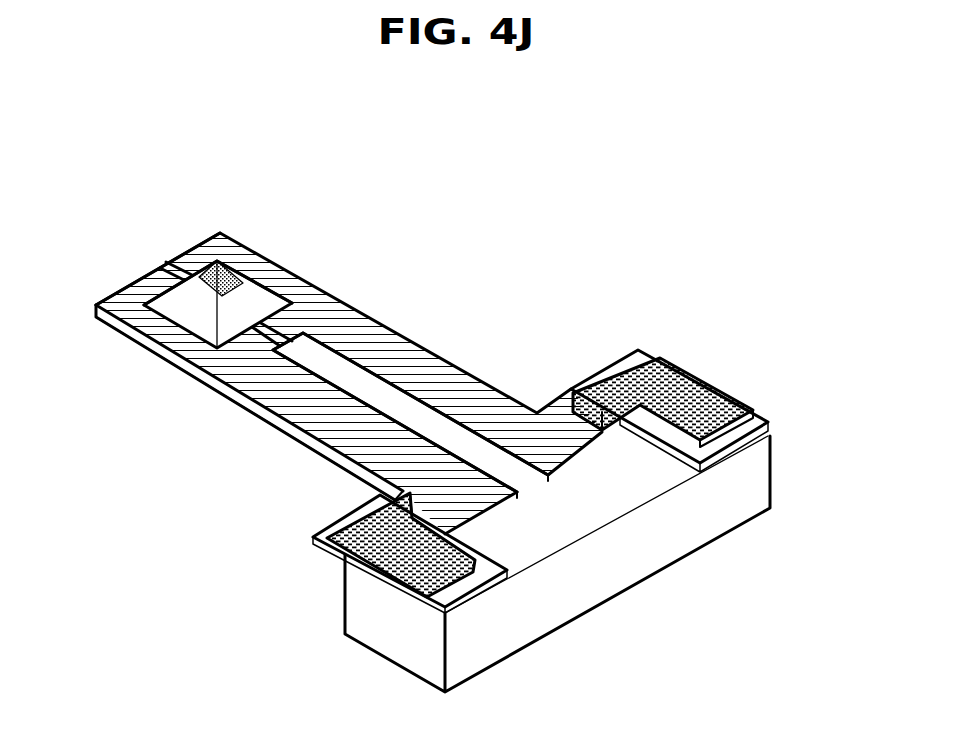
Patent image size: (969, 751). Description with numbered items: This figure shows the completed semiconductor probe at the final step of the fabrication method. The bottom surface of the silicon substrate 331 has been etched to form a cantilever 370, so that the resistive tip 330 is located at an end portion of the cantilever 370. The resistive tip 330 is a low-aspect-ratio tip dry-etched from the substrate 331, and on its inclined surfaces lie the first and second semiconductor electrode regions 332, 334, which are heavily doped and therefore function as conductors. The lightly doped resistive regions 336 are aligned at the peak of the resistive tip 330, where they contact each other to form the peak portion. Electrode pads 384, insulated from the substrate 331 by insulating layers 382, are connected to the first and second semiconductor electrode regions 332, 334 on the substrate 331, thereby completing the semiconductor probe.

The resistive tip 330 is at (265, 262).
The silicon substrate 331 is at (762, 477).
The first semiconductor electrode region 332 is at (322, 295).
The second semiconductor electrode region 334 is at (120, 302).
The resistive region 336 is at (228, 262).
The cantilever 370 is at (147, 338).
The insulating layer 382 is at (752, 427).
The electrode pad 384 is at (690, 378).